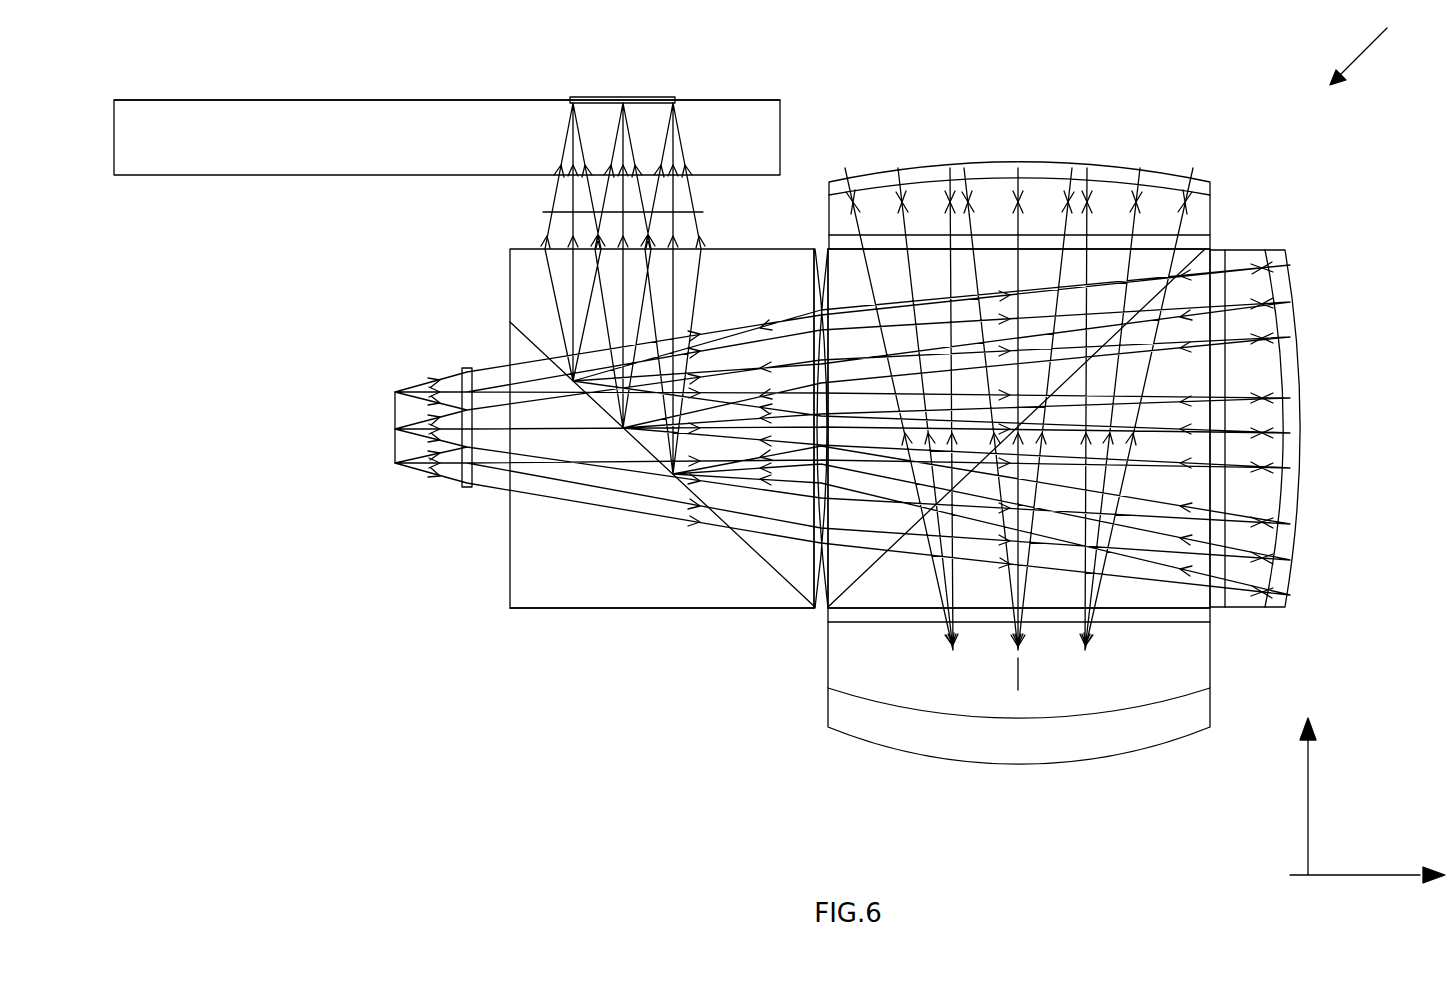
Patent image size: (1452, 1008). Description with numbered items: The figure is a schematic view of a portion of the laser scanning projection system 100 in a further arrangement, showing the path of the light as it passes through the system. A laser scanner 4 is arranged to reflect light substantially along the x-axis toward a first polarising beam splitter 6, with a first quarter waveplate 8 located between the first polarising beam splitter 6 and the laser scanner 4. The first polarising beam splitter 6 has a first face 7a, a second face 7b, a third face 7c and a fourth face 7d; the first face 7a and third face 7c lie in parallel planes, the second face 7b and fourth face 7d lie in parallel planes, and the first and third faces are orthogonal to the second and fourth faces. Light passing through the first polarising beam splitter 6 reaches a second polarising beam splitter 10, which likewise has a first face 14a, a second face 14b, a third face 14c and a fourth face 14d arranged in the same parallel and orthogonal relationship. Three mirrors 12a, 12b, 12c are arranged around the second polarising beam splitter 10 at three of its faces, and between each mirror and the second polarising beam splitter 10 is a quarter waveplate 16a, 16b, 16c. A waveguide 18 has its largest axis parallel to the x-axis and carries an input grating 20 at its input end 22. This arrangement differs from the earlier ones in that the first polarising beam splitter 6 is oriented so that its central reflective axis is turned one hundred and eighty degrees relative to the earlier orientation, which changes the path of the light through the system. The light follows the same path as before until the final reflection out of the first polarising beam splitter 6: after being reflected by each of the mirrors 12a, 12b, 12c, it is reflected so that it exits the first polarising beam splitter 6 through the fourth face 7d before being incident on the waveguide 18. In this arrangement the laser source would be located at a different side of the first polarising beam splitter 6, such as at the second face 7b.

The laser scanning projection system 100 is at (1361, 459).
The laser scanner 4 is at (394, 408).
The first polarising beam splitter 6 is at (580, 580).
The first face 7a is at (812, 568).
The second face 7b is at (683, 608).
The third face 7c is at (510, 290).
The fourth face 7d is at (781, 248).
The first quarter waveplate 8 is at (462, 484).
The second polarising beam splitter 10 is at (1150, 265).
The mirror 12a is at (1288, 540).
The mirror 12b is at (985, 675).
The mirror 12c is at (1110, 175).
The first face 14a is at (1218, 272).
The second face 14b is at (1186, 608).
The third face 14c is at (829, 610).
The fourth face 14d is at (880, 250).
The quarter waveplate 16a is at (1222, 377).
The quarter waveplate 16b is at (1138, 625).
The quarter waveplate 16c is at (998, 234).
The waveguide 18 is at (356, 150).
The input grating 20 is at (648, 97).
The input end 22 is at (741, 100).